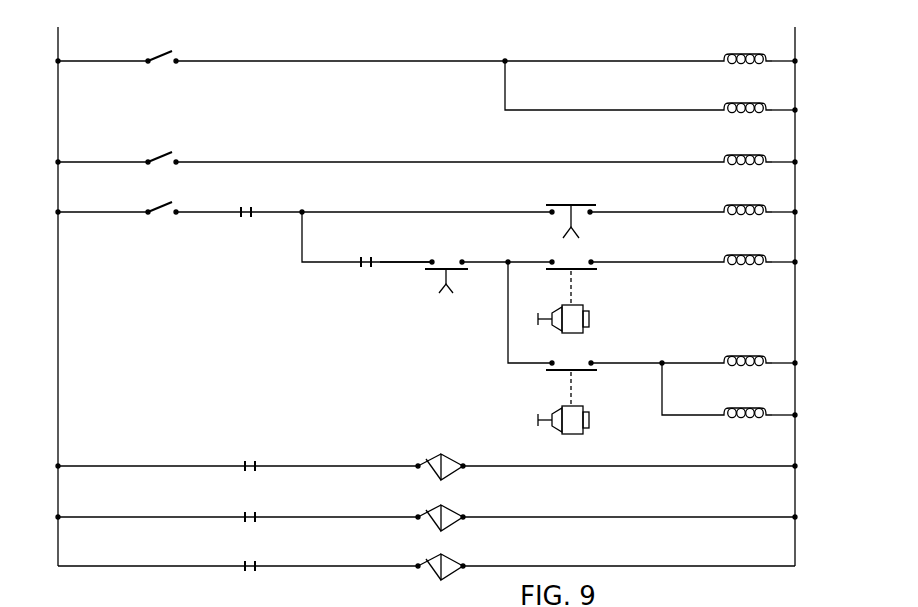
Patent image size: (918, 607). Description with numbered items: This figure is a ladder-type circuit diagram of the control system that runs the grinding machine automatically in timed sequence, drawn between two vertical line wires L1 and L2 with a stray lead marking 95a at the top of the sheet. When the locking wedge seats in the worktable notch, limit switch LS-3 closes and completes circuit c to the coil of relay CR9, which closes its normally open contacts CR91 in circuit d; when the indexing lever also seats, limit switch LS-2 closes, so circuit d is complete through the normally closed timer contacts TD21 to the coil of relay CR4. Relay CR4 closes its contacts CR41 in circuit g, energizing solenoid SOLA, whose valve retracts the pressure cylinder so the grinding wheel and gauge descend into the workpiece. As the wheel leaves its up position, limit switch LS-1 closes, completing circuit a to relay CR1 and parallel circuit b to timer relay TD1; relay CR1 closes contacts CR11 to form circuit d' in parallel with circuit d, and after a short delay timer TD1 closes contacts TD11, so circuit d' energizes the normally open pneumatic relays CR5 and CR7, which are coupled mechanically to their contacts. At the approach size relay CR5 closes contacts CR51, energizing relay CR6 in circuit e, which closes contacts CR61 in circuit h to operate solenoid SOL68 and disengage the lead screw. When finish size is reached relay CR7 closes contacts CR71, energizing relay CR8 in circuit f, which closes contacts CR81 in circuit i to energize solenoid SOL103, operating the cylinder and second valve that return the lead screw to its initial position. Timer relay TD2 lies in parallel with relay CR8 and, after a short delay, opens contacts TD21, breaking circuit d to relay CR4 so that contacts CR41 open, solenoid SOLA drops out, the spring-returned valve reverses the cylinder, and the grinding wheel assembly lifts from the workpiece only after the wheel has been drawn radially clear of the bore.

The line wire L1 is at (56, 286).
The line wire L2 is at (791, 286).
The lead 95a is at (620, 6).
The circuit a is at (447, 50).
The circuit b is at (611, 85).
The circuit c is at (447, 149).
The circuit d is at (427, 199).
The circuit d' is at (406, 250).
The circuit e is at (507, 251).
The circuit f is at (654, 352).
The circuit g is at (323, 453).
The circuit h is at (311, 504).
The circuit i is at (311, 553).
The limit switch LS-1 is at (117, 50).
The limit switch LS-2 is at (117, 200).
The limit switch LS-3 is at (117, 151).
The electromagnetic relay CR1 is at (757, 49).
The timer relay TD1 is at (757, 99).
The electromagnetic relay CR9 is at (757, 150).
The relay contacts CR91 is at (240, 202).
The timer relay contacts TD21 is at (632, 211).
The electromagnetic relay CR4 is at (757, 200).
The relay contacts CR11 is at (367, 239).
The timer relay contacts TD11 is at (447, 267).
The relay contacts CR51 is at (632, 282).
The pneumatic control relay CR5 is at (583, 319).
The electromagnetic relay CR6 is at (757, 250).
The relay contacts CR71 is at (566, 333).
The pneumatic control relay CR7 is at (583, 420).
The electromagnetic relay CR8 is at (757, 351).
The timer relay TD2 is at (729, 390).
The relay contacts CR41 is at (237, 456).
The relay contacts CR61 is at (237, 507).
The relay contacts CR81 is at (238, 556).
The solenoid A SOLA is at (606, 463).
The solenoid 68 SOL68 is at (606, 514).
The solenoid 103 SOL103 is at (605, 564).